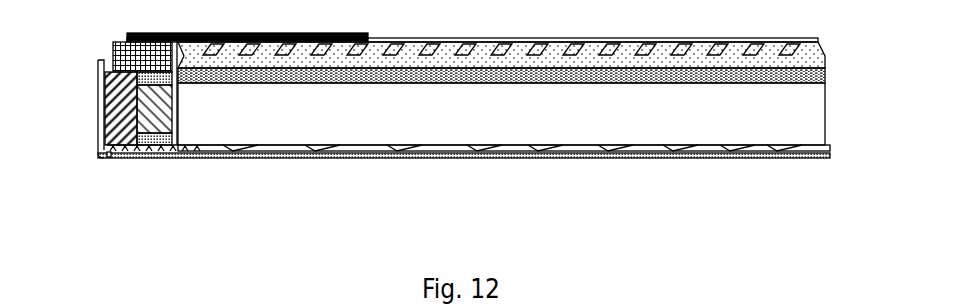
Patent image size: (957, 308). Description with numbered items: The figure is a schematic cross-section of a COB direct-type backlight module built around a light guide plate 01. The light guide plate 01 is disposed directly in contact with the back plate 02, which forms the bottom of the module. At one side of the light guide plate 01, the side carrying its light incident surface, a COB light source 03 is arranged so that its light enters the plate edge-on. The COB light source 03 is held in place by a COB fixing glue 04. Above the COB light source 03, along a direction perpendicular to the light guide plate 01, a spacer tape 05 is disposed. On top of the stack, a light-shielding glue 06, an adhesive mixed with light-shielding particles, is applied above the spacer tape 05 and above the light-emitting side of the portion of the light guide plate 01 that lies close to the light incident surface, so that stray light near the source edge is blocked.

The light guide plate 01 is at (832, 42).
The back plate 02 is at (225, 158).
The COB light source 03 is at (150, 150).
The COB fixing glue 04 is at (109, 154).
The spacer tape 05 is at (113, 53).
The light-shielding glue 06 is at (130, 35).